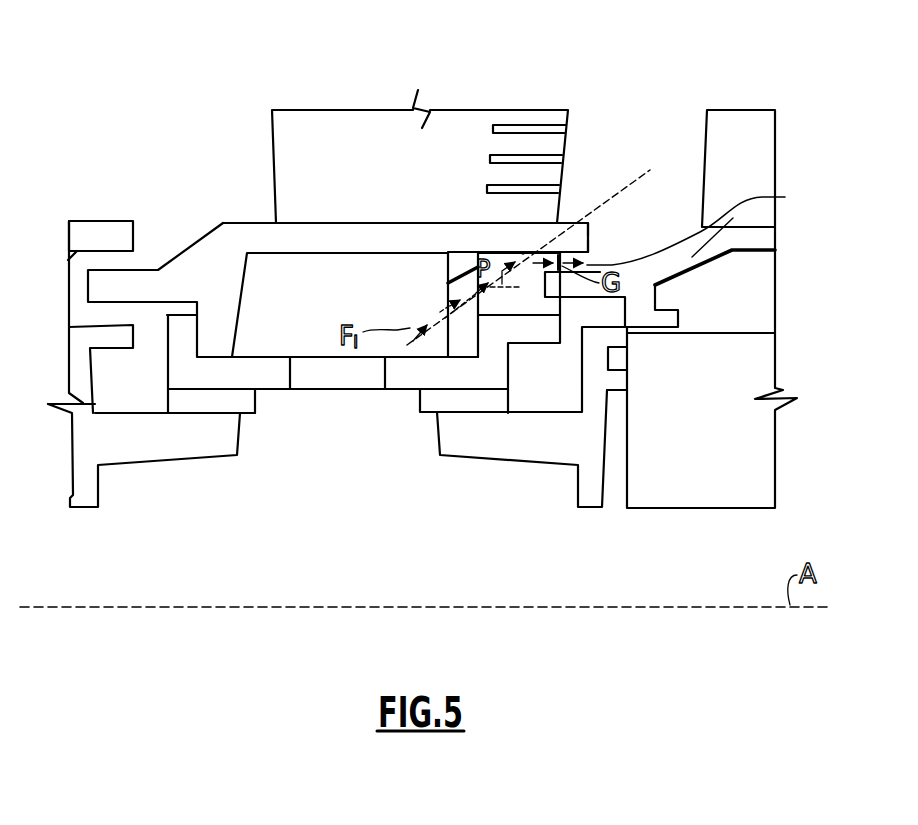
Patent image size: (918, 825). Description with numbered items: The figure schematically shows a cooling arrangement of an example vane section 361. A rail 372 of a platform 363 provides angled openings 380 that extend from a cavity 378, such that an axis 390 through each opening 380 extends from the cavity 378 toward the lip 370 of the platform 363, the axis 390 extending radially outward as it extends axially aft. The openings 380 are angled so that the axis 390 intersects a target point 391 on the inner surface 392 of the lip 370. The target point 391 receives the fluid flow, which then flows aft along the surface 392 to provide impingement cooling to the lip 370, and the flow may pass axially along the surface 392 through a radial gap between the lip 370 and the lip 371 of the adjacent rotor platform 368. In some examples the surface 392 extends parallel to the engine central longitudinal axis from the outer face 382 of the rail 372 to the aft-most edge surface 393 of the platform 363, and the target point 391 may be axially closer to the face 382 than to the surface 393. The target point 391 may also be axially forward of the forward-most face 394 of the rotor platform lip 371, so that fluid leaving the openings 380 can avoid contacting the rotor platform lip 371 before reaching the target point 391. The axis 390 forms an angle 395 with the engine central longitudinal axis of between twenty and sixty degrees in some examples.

The vane section 361 is at (250, 113).
The platform 363 is at (262, 237).
The rotor platform 368 is at (707, 309).
The lip 370 is at (568, 236).
The rotor platform lip 371 is at (583, 292).
The rail 372 is at (463, 337).
The cavity 378 is at (304, 319).
The angled openings 380 is at (447, 293).
The outer face 382 is at (477, 267).
The axis 390 is at (647, 170).
The target point 391 is at (523, 253).
The inner surface 392 is at (589, 264).
The aft-most edge surface 393 is at (588, 234).
The forward-most face 394 is at (505, 273).
The angle 395 is at (540, 282).